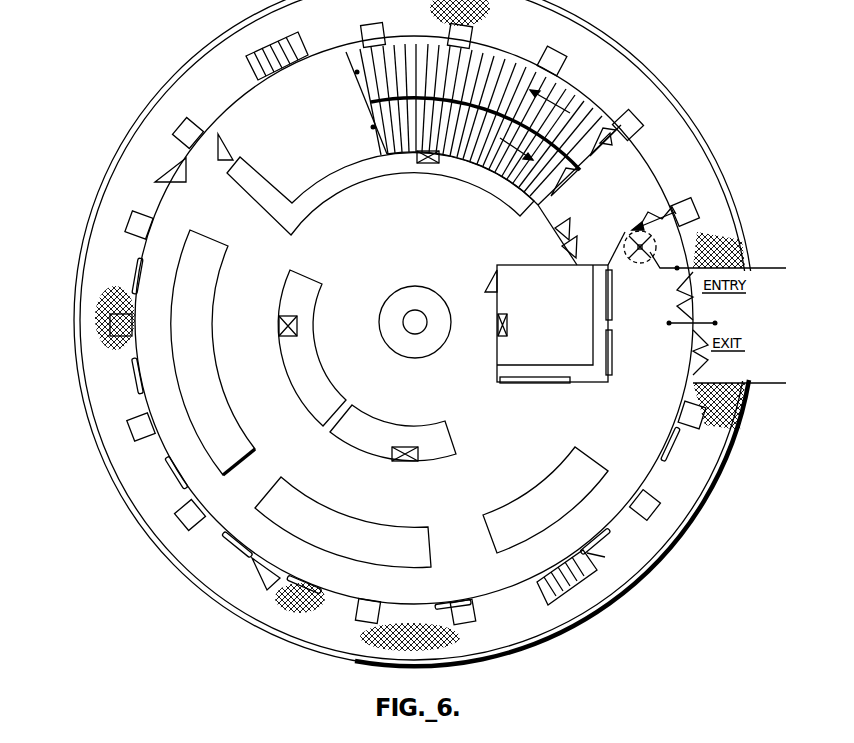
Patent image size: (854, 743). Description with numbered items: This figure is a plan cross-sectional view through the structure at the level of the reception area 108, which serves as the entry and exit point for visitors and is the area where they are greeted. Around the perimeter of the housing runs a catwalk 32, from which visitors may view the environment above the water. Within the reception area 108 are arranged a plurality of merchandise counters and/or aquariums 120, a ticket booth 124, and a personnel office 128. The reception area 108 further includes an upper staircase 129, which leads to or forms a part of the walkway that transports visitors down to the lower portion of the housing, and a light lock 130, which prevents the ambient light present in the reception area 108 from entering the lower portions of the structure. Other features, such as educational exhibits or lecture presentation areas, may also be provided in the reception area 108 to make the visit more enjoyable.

The catwalk 32 is at (98, 356).
The reception area 108 is at (424, 269).
The merchandise counters and/or aquariums 120 is at (254, 450).
The ticket booth 124 is at (611, 320).
The personnel office 128 is at (508, 278).
The upper staircase 129 is at (380, 77).
The light lock 130 is at (645, 175).